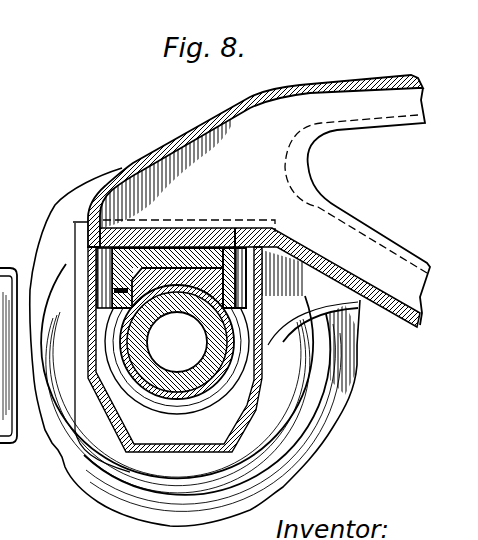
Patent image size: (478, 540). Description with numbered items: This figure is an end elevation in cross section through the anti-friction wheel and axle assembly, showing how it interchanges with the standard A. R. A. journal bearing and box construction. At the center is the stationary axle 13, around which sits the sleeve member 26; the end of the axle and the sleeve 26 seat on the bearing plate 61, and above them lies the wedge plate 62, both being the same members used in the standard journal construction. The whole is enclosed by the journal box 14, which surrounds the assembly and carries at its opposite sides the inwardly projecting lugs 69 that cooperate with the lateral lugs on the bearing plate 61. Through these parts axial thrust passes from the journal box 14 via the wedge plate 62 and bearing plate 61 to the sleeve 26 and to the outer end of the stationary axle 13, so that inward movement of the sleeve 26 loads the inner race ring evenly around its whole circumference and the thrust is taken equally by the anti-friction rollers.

The stationary axle 13 is at (187, 378).
The journal box 14 is at (243, 427).
The sleeve member 26 is at (143, 380).
The bearing plate 61 is at (233, 229).
The wedge plate 62 is at (193, 262).
The inwardly projecting lugs 69 is at (110, 298).